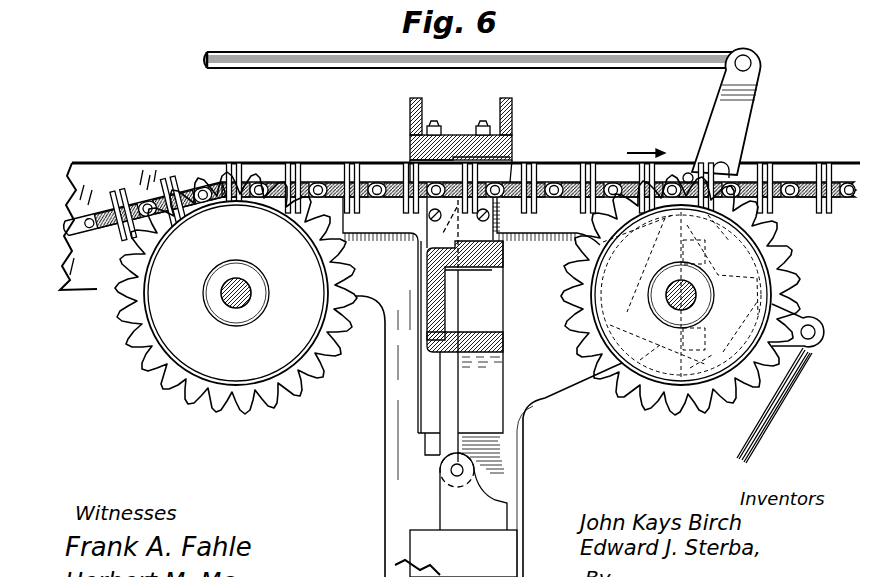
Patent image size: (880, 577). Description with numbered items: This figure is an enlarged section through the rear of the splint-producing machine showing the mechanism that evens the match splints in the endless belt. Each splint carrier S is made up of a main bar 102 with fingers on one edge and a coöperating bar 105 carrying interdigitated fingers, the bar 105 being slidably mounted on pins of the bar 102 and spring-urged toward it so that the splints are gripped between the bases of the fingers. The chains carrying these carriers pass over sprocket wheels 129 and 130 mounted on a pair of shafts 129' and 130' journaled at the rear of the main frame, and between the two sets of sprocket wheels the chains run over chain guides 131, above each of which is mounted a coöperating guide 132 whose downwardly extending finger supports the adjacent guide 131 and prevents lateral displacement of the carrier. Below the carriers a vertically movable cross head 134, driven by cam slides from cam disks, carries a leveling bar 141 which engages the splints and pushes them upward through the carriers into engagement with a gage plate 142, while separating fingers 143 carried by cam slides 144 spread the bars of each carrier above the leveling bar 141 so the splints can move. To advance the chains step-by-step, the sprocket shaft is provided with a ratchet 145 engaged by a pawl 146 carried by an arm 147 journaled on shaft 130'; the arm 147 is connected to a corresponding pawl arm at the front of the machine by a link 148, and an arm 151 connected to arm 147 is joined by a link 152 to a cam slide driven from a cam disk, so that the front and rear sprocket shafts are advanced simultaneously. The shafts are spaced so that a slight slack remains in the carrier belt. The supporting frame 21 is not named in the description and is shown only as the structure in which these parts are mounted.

The link 148 is at (318, 62).
The arm 147 is at (743, 115).
The pawl 146 is at (727, 170).
The ratchet 145 is at (777, 258).
The arm 151 is at (800, 318).
The link 152 is at (770, 428).
The sprocket wheel 130 is at (680, 312).
The shaft 130' is at (665, 313).
The sprocket wheel 129 is at (236, 311).
The shaft 129' is at (232, 321).
The frame standard 21 is at (382, 490).
The cam slide 144 is at (473, 491).
The leveling bar 141 is at (503, 253).
The separating finger 143 is at (459, 302).
The cross head 134 is at (503, 350).
The chain guide 131 is at (471, 315).
The guide 132 is at (420, 162).
The gage plate 142 is at (512, 128).
The bar 105 is at (213, 176).
The main bar 102 is at (310, 183).
The splint carrier s is at (353, 178).